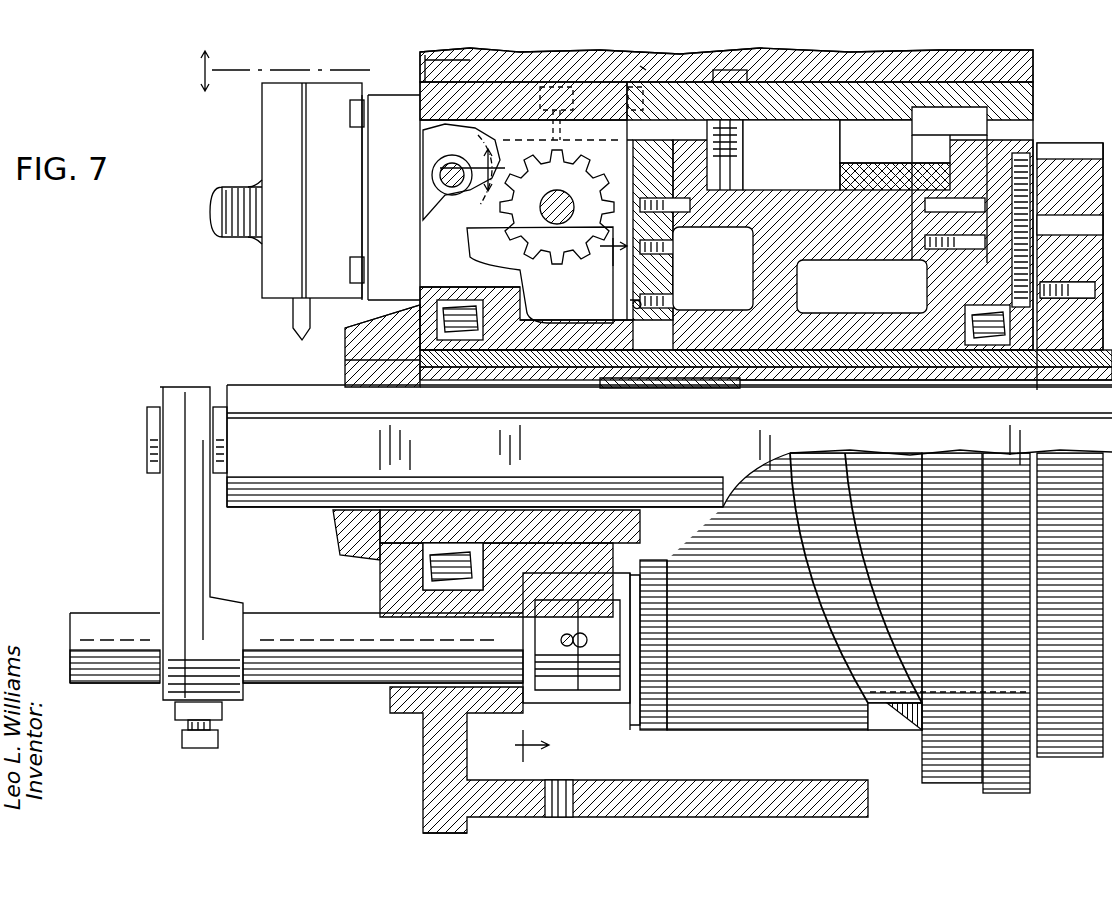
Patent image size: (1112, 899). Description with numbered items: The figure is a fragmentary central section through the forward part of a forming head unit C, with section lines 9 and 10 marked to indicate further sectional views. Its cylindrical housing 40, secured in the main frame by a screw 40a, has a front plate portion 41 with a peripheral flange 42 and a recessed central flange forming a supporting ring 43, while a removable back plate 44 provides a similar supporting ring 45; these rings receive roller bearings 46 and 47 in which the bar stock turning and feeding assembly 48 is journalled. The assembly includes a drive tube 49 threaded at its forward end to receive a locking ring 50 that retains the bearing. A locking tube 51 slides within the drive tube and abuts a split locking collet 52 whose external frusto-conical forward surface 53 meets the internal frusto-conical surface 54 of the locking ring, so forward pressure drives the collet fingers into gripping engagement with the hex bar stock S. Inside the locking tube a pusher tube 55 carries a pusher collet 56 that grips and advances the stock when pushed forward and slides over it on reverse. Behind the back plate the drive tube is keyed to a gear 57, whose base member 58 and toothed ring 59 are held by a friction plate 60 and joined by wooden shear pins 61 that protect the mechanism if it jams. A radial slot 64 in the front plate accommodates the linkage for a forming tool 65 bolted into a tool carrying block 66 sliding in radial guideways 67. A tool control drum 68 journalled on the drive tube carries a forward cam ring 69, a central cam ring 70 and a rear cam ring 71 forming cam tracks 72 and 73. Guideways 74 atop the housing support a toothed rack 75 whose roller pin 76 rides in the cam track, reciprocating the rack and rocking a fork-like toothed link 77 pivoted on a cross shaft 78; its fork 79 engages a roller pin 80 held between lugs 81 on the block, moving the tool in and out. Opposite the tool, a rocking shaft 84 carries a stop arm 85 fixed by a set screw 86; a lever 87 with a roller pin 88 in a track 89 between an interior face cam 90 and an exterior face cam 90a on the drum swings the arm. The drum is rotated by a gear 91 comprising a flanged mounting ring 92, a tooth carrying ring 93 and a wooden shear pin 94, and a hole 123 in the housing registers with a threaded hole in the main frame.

The section line 9- 9 is at (344, 121).
The section line 10- 10 is at (555, 500).
The cylindrical housing 40 is at (805, 80).
The screw 40a is at (722, 70).
The forming head unit C is at (638, 57).
The front plate portion 41 is at (437, 734).
The peripheral flange 42 is at (423, 833).
The supporting ring 43 is at (395, 305).
The removable back plate 44 is at (1026, 120).
The supporting ring 45 is at (990, 346).
The roller bearing 46 is at (450, 322).
The roller bearing 47 is at (955, 376).
The bar stock turning and feeding assembly 48 is at (554, 346).
The drive tube 49 is at (590, 358).
The locking ring 50 is at (340, 343).
The locking tube 51 is at (548, 370).
The locking collet 52 is at (405, 378).
The external frusto-conical forward surface 53 is at (335, 379).
The internal frusto-conical surface 54 is at (343, 362).
The pusher tube 55 is at (868, 377).
The pusher collet 56 is at (612, 390).
The gear 57 is at (1066, 760).
The base member 58 is at (1046, 200).
The toothed ring 59 is at (1080, 163).
The friction plate 60 is at (1072, 356).
The wooden shear pins 61 is at (1067, 253).
The radial slot 64 is at (458, 274).
The forming tool 65 is at (292, 314).
The tool carrying block 66 is at (322, 92).
The radial guideways 67 is at (368, 96).
The tool control drum 68 is at (806, 186).
The forward cam ring 69 is at (637, 732).
The central cam ring 70 is at (765, 724).
The rear cam ring 71 is at (882, 160).
The cam track 72 is at (707, 697).
The cam track 73 is at (838, 182).
The guideways 74 is at (788, 150).
The toothed rack 75 is at (590, 130).
The roller pin 76 is at (708, 175).
The fork-like toothed link 77 is at (562, 250).
The cross shaft 78 is at (549, 200).
The fork 79 is at (448, 156).
The roller pin 80 is at (440, 175).
The lugs 81 is at (440, 228).
The rocking shaft 84 is at (288, 625).
The stop arm 85 is at (166, 542).
The set screw 86 is at (206, 750).
The lever 87 is at (553, 692).
The roller pin 88 is at (616, 692).
The track 89 is at (672, 283).
The interior face cam 90 is at (672, 298).
The exterior face cam 90a is at (664, 250).
The gear 91 is at (950, 782).
The flanged mounting ring 92 is at (953, 258).
The tooth carrying ring 93 is at (958, 118).
The wooden shear pin 94 is at (888, 233).
The hole 123 is at (560, 818).
The hex bar stock S is at (240, 387).